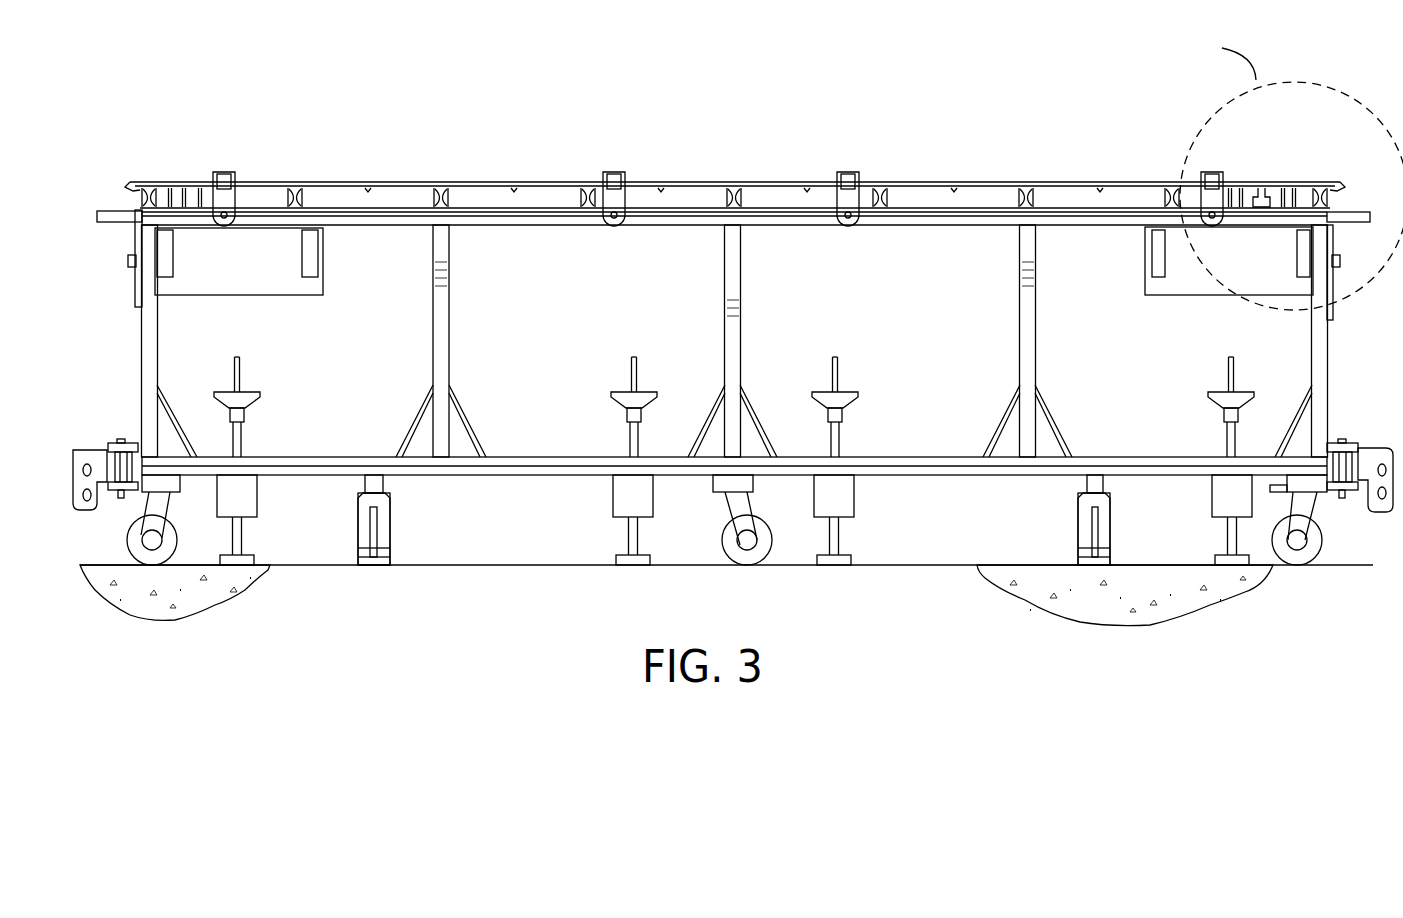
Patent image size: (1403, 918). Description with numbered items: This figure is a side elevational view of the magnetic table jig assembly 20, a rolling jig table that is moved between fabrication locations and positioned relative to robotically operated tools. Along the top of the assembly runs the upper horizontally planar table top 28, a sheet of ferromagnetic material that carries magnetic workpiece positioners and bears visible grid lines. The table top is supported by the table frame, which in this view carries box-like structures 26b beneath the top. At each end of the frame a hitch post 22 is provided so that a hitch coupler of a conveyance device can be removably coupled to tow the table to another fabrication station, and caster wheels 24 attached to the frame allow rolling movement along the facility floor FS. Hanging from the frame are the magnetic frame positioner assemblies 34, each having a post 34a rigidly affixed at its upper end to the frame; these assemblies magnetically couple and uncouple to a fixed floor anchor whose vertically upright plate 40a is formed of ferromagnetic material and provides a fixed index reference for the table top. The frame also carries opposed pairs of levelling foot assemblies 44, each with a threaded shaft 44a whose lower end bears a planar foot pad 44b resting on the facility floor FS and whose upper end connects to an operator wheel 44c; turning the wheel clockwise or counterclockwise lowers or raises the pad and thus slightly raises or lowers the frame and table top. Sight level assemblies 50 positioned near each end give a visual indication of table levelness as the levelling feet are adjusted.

The magnetic table jig assembly 20 is at (400, 118).
The hitch post 22 is at (76, 455).
The caster wheels 24 is at (128, 540).
The storage box 26b is at (217, 268).
The table top 28 is at (718, 180).
The magnetic frame positioner assembly 34 is at (392, 532).
The post 34a is at (384, 482).
The upright plate 40a is at (358, 518).
The levelling foot assembly 44 is at (215, 490).
The threaded shaft 44a is at (235, 438).
The foot pad 44b is at (238, 566).
The operator wheel 44c is at (247, 391).
The sight level assembly 50 is at (192, 186).
The facility floor FS is at (480, 566).